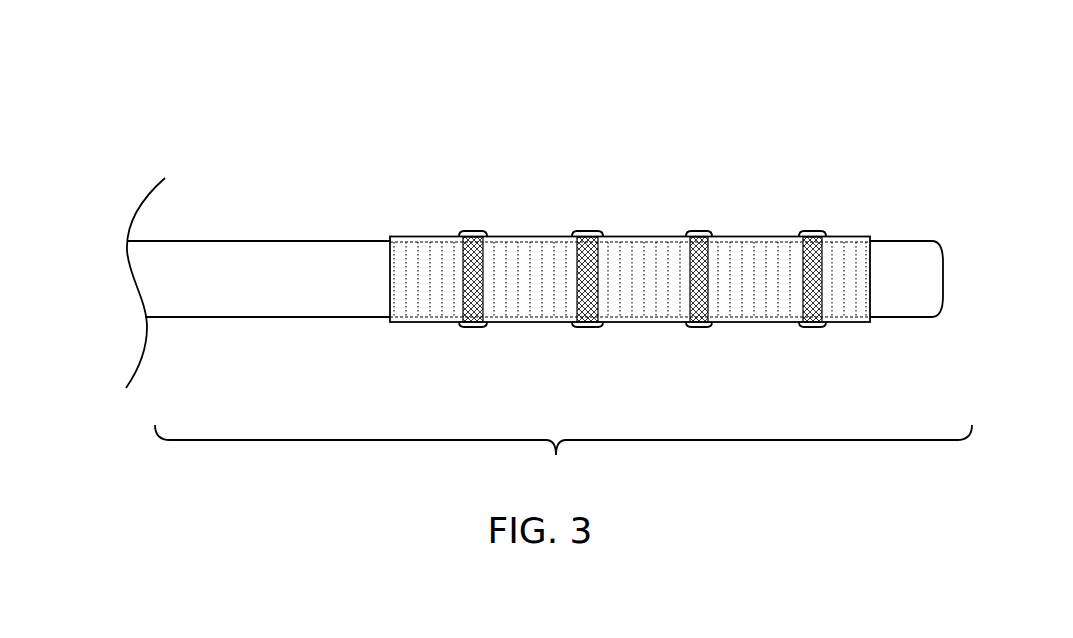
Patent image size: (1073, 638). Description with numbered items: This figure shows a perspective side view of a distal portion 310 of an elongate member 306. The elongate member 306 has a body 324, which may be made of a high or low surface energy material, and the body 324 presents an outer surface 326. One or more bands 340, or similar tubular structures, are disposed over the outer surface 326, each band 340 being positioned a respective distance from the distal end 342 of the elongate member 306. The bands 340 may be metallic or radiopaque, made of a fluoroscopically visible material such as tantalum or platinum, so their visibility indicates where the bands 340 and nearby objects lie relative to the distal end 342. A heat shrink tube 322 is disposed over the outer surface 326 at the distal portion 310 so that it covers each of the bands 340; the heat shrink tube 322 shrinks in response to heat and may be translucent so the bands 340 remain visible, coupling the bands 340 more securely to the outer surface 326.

The elongate member 306 is at (925, 115).
The distal portion 310 is at (563, 457).
The heat shrink tube 322 is at (753, 303).
The body 324 is at (293, 291).
The outer surface 326 is at (287, 241).
The band 340 is at (477, 245).
The distal end 342 is at (943, 278).